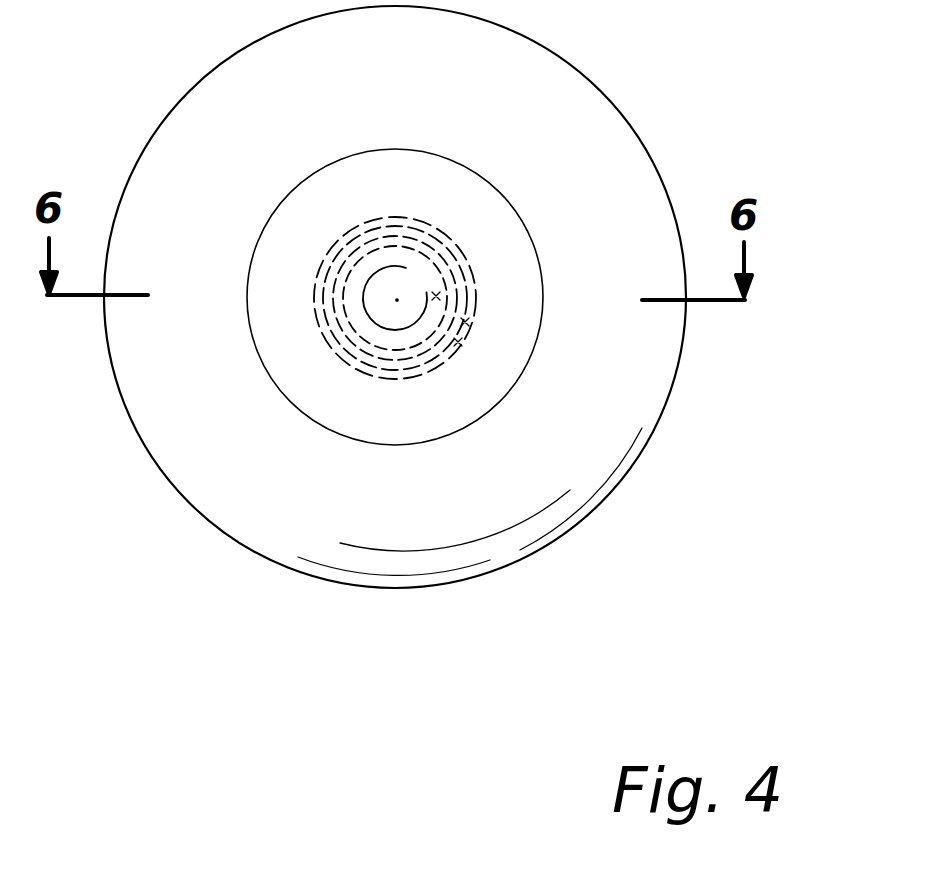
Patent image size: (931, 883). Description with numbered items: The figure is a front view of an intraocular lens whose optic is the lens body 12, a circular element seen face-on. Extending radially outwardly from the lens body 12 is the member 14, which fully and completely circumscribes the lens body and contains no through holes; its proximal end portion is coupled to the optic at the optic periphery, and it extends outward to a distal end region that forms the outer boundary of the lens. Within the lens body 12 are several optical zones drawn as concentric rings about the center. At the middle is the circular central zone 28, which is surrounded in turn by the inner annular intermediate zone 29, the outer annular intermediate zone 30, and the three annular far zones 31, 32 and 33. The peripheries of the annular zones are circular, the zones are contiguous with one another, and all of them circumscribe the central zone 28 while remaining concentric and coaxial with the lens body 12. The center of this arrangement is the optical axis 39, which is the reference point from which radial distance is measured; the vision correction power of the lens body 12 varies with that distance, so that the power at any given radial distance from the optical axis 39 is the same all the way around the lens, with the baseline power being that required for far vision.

The lens body 12 is at (278, 357).
The member 14 is at (272, 535).
The central zone 28 is at (413, 285).
The inner annular intermediate zone 29 is at (428, 290).
The outer annular intermediate zone 30 is at (465, 322).
The annular far zone 31 is at (478, 284).
The annular far zone 32 is at (460, 342).
The annular far zone 33 is at (427, 417).
The optical axis 39 is at (397, 300).